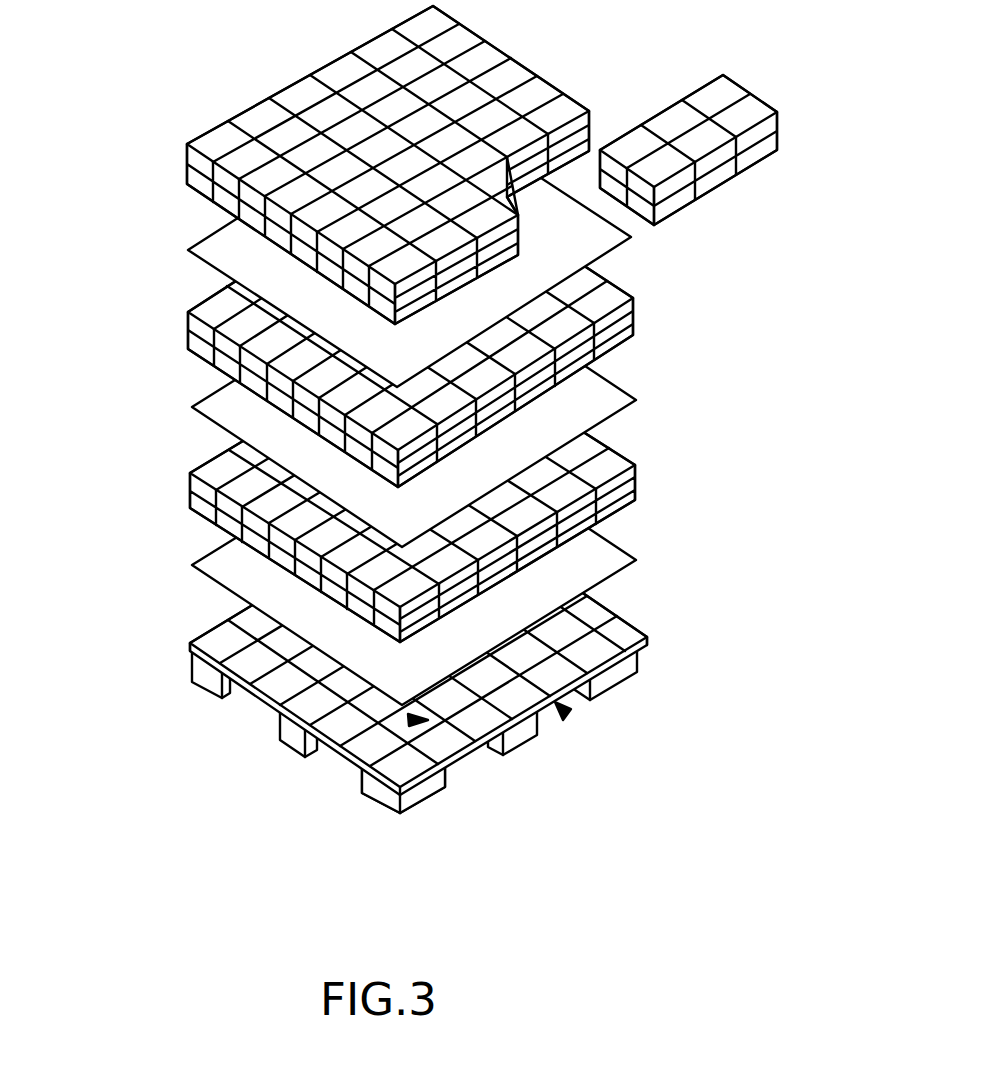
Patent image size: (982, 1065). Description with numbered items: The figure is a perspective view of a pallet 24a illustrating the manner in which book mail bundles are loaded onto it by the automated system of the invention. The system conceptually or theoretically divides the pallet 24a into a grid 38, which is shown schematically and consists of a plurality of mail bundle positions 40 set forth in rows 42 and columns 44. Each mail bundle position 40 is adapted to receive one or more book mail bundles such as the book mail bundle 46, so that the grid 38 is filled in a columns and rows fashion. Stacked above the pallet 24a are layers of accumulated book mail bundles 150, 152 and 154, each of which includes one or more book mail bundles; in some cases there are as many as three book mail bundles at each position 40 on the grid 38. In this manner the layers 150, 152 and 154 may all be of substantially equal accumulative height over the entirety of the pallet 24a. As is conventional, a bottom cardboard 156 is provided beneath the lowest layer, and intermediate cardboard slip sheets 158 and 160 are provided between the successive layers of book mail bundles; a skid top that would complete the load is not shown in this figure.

The pallet 24a is at (565, 712).
The grid 38 is at (405, 722).
The mail bundle position 40 is at (622, 634).
The rows 42 is at (217, 641).
The columns 44 is at (417, 767).
The book mail bundle 46 is at (332, 263).
The layer of accumulated book mail bundles 150 is at (637, 478).
The layer of accumulated book mail bundles 152 is at (636, 312).
The layer of accumulated book mail bundles 154 is at (442, 165).
The bottom cardboard 156 is at (603, 558).
The intermediate cardboard slip sheet 158 is at (612, 396).
The intermediate cardboard slip sheet 160 is at (610, 238).